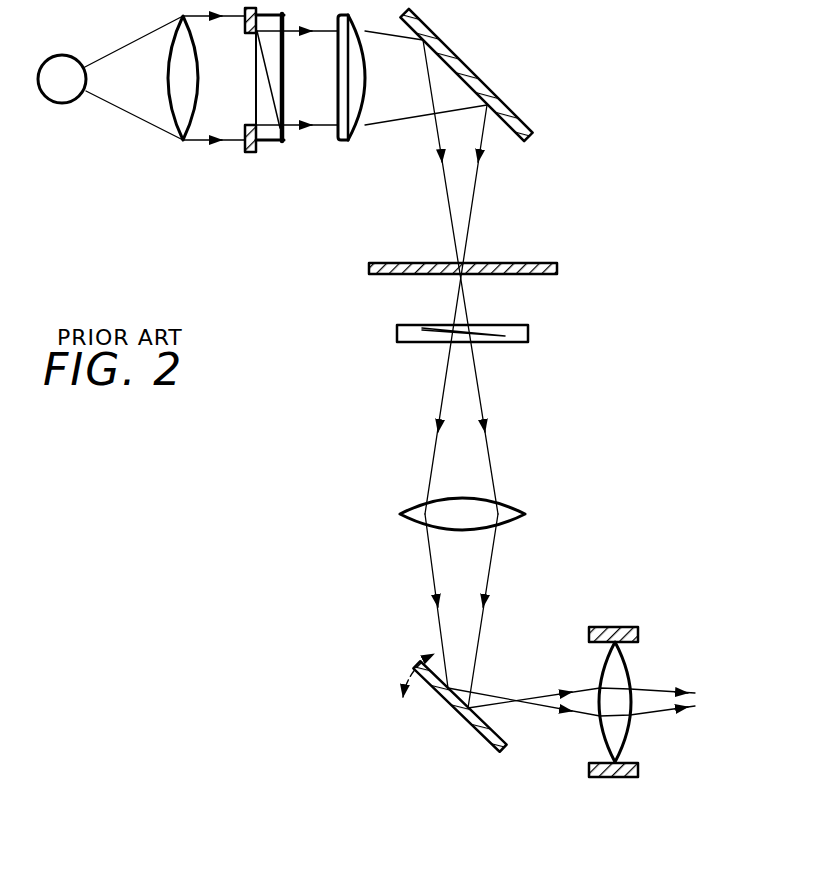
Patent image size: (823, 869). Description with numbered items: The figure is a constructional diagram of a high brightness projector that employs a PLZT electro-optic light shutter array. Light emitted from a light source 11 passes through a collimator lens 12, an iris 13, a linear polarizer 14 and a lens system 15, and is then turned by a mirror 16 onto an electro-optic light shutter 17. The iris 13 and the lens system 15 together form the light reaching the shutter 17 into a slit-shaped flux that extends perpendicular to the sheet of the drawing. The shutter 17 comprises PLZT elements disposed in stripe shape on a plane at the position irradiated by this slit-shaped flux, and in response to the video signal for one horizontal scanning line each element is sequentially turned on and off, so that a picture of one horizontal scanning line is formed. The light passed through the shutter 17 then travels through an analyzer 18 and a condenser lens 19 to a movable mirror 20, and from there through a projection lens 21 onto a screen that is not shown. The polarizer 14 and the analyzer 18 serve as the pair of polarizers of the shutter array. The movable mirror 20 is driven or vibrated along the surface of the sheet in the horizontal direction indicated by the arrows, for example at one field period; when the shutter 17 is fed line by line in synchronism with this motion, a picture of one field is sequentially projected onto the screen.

The light source 11 is at (50, 94).
The collimator lens 12 is at (178, 116).
The iris 13 is at (248, 153).
The linear polarizer 14 is at (270, 140).
The lens system 15 is at (345, 140).
The mirror 16 is at (477, 82).
The electro-optic light shutter 17 is at (529, 244).
The analyzer 18 is at (507, 334).
The condenser lens 19 is at (508, 515).
The movable mirror 20 is at (460, 715).
The projection lens 21 is at (605, 728).